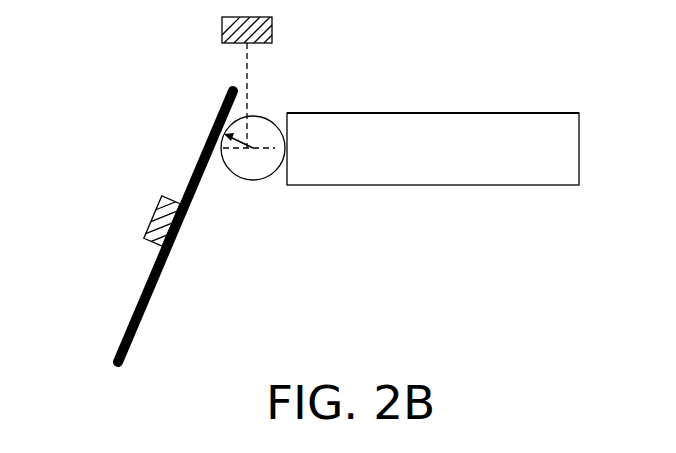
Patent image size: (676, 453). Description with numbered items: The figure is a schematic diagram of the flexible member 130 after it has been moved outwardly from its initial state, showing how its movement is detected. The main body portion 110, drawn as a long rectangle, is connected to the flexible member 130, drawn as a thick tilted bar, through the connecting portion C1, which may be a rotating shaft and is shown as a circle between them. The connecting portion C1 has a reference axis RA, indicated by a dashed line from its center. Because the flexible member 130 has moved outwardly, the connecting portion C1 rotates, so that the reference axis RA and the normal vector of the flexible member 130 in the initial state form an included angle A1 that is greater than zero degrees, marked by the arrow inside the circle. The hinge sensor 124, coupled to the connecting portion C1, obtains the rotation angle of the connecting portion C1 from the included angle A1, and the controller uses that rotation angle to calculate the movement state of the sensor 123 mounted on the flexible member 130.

The main body portion 110 is at (520, 113).
The sensor 123 is at (146, 225).
The hinge sensor 124 is at (222, 26).
The flexible member 130 is at (126, 322).
The connecting portion C1 is at (270, 117).
The included angle A1 is at (223, 143).
The reference axis RA is at (256, 152).